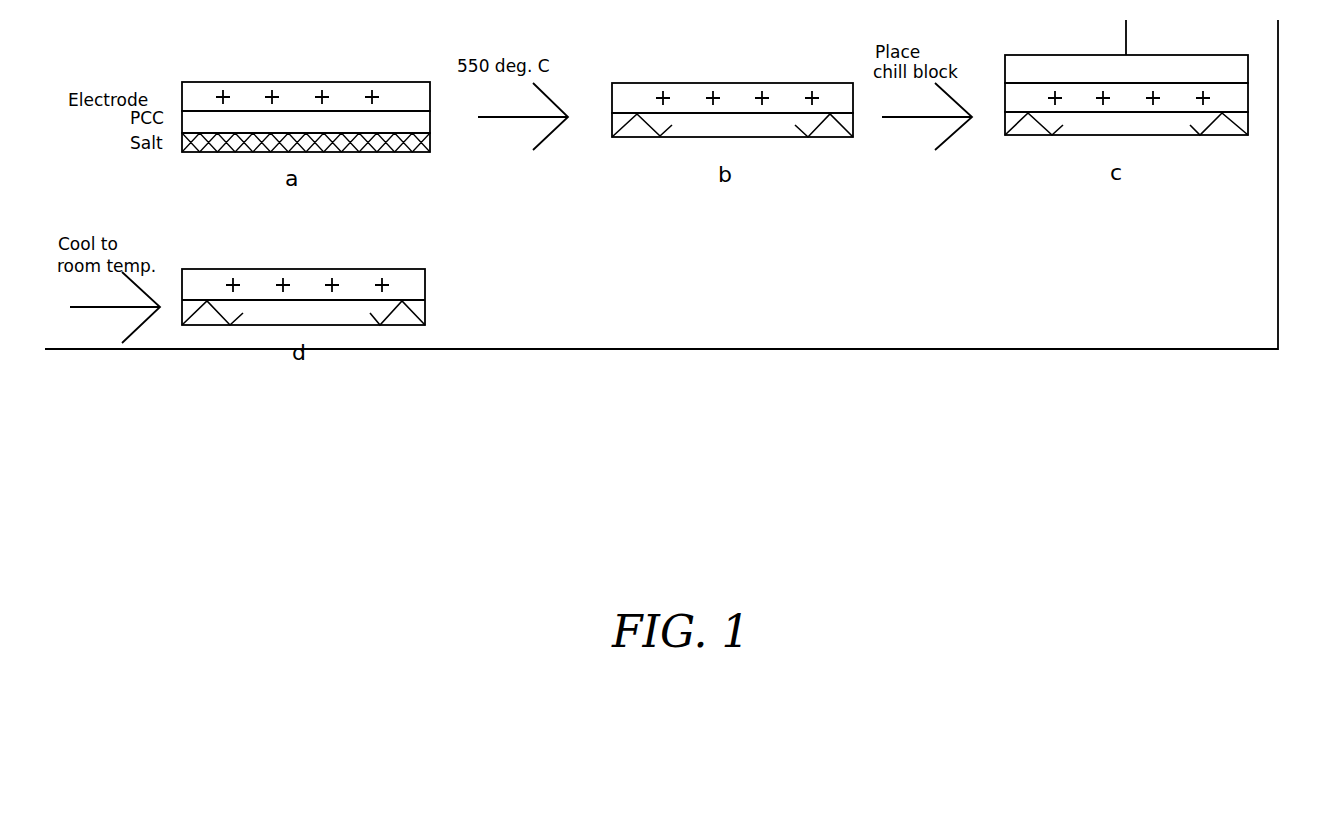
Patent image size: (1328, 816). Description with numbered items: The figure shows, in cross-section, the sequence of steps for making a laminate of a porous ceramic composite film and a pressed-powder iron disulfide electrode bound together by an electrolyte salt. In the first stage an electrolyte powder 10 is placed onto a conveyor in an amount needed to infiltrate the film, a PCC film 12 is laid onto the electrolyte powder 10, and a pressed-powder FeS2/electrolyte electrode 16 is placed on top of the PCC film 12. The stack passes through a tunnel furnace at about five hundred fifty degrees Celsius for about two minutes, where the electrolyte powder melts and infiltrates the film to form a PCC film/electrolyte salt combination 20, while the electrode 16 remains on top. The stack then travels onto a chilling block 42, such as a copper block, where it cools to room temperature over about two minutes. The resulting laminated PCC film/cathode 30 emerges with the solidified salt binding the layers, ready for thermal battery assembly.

The electrolyte powder 10 is at (430, 142).
The PCC film 12 is at (430, 126).
The pressed-powder FeS2/electrolyte electrode 16 is at (430, 97).
The PCC film/electrolyte salt combination 20 is at (853, 128).
The laminated PCC film/cathode 30 is at (321, 297).
The chilling block 42 is at (1248, 72).